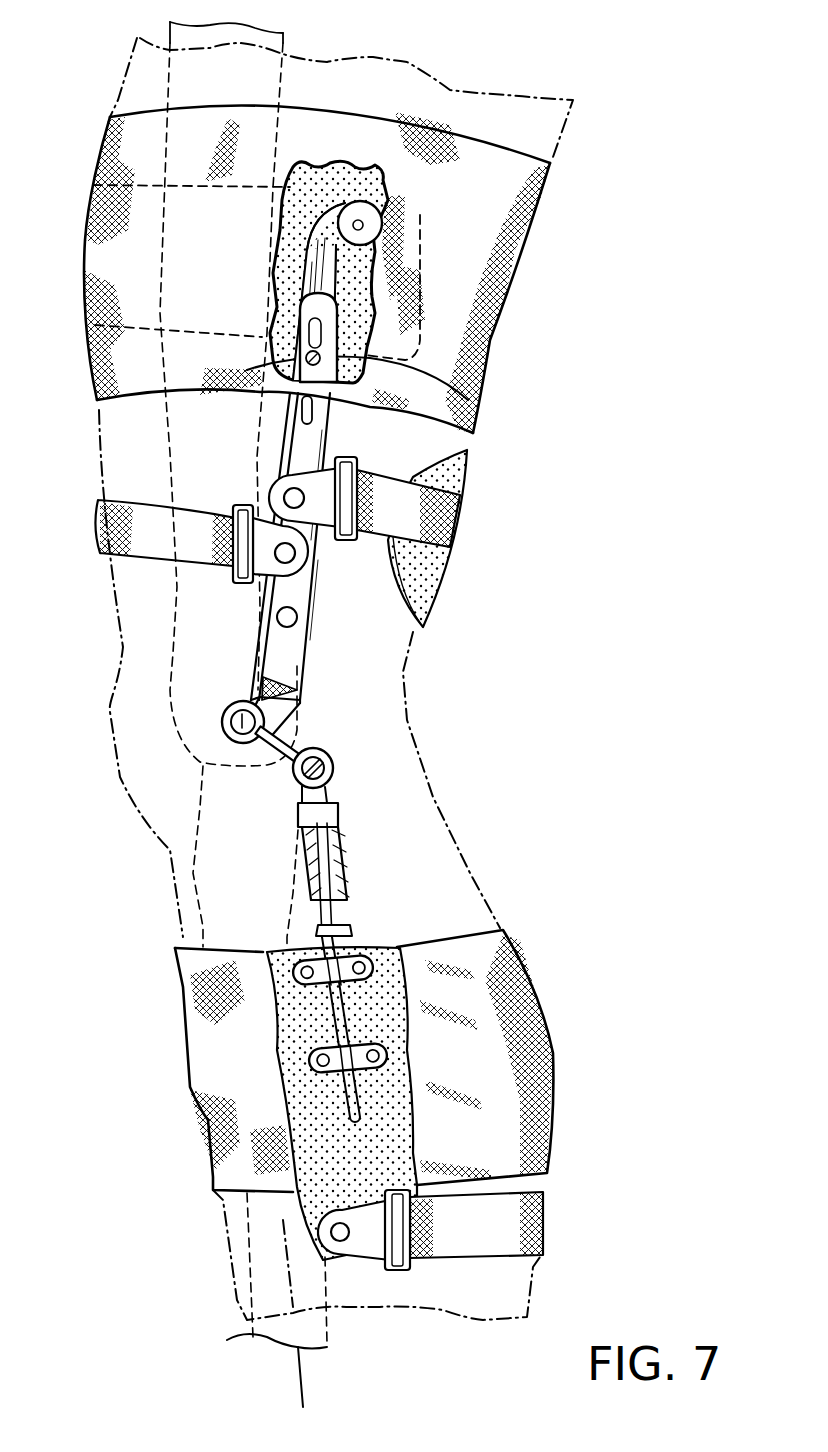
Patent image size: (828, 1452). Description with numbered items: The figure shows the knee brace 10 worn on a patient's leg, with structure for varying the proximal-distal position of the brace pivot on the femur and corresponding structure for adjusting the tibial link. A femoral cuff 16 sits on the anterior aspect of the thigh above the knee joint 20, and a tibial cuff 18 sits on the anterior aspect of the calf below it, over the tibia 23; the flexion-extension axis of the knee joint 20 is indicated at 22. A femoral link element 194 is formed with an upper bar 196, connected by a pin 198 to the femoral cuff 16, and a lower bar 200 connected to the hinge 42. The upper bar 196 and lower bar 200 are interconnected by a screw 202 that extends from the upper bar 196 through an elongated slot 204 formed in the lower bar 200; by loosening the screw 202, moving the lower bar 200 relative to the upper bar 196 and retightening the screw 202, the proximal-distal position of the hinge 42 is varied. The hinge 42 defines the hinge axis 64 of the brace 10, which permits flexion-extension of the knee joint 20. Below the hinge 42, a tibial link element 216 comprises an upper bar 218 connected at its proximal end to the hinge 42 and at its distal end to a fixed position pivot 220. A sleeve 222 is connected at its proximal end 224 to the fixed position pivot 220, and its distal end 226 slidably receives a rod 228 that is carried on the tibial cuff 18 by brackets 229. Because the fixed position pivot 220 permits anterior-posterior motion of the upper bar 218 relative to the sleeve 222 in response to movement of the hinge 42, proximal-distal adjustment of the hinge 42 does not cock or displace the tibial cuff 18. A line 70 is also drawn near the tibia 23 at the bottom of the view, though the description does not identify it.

The knee brace 10 is at (471, 72).
The femoral cuff 16 is at (308, 197).
The tibial cuff 18 is at (390, 1133).
The knee joint 20 is at (157, 777).
The flexion-extension axis 22 is at (262, 712).
The tibia 23 is at (253, 1340).
The hinge 42 is at (224, 720).
The hinge axis 64 is at (240, 740).
The tibial axis 70 is at (307, 1383).
The femoral link element 194 is at (333, 430).
The upper bar 196 is at (320, 248).
The pin 198 is at (368, 226).
The lower bar 200 is at (312, 588).
The screw 202 is at (298, 398).
The elongated slot 204 is at (305, 418).
The tibial link element 216 is at (423, 972).
The upper bar 218 is at (297, 742).
The fixed position pivot 220 is at (337, 760).
The sleeve 222 is at (343, 862).
The proximal end 224 is at (333, 792).
The distal end 226 is at (353, 902).
The rod 228 is at (350, 1017).
The brackets 229 is at (303, 982).